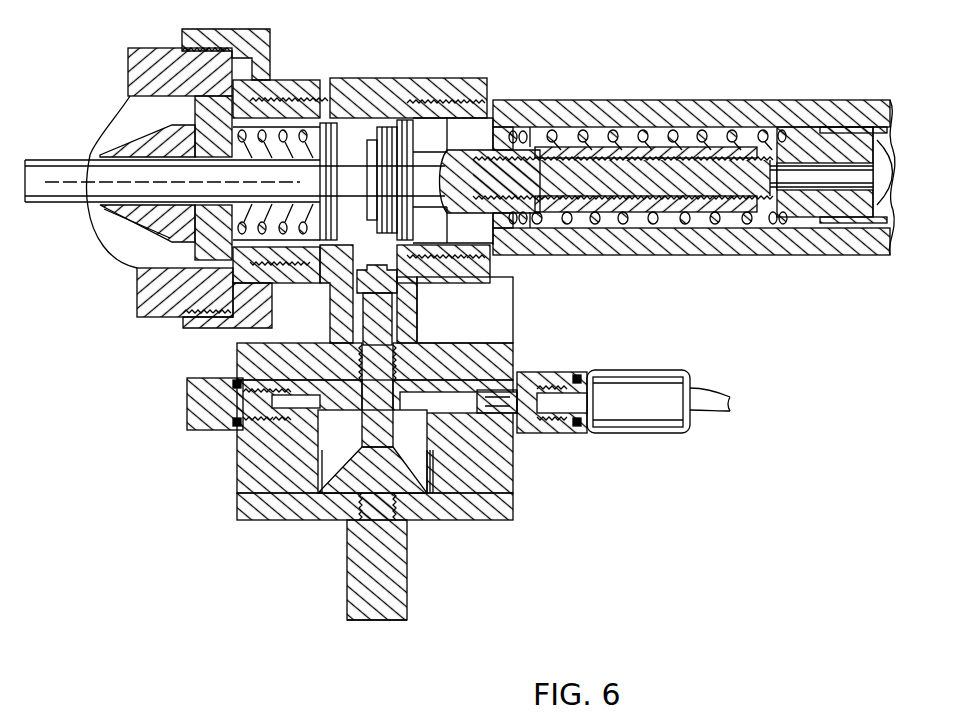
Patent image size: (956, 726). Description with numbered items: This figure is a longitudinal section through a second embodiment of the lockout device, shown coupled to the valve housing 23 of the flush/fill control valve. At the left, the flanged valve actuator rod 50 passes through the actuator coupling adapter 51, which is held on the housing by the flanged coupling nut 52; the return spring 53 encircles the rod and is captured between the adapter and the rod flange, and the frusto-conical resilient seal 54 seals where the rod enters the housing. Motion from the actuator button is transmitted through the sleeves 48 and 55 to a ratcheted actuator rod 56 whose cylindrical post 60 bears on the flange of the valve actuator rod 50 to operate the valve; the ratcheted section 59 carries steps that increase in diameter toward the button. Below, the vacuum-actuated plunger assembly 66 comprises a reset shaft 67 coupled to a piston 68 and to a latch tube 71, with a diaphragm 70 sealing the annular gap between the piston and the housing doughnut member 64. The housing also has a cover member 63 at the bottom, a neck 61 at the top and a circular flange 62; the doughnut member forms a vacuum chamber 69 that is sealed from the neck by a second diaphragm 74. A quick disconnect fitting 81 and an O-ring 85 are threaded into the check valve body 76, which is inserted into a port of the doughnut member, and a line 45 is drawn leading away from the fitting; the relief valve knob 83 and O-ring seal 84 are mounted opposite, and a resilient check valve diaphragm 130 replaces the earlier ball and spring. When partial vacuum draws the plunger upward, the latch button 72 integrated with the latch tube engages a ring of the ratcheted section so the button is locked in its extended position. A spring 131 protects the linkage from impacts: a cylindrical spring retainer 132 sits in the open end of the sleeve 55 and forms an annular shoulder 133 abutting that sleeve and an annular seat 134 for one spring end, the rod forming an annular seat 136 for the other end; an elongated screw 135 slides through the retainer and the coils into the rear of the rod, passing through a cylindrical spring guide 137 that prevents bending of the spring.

The valve housing 23 is at (155, 48).
The electrical lead 45 is at (713, 392).
The sleeve 48 is at (626, 100).
The valve actuator rod 50 is at (47, 186).
The actuator coupling adapter 51 is at (262, 92).
The flanged coupling nut 52 is at (270, 40).
The return spring 53 is at (333, 80).
The frusto-conical resilient seal 54 is at (124, 148).
The actuator sleeve 55 is at (857, 130).
The actuator rod 56 is at (428, 146).
The ratcheted section 59 is at (398, 120).
The cylindrical post 60 is at (338, 153).
The neck 61 is at (418, 308).
The circular flange 62 is at (458, 343).
The cover member 63 is at (498, 521).
The housing doughnut member 64 is at (237, 482).
The vacuum-actuated plunger assembly 66 is at (388, 628).
The reset shaft 67 is at (410, 568).
The piston 68 is at (350, 448).
The vacuum chamber 69 is at (446, 411).
The diaphragm 70 is at (433, 453).
The latch tube 71 is at (353, 305).
The latch button 72 is at (377, 266).
The second diaphragm 74 is at (350, 338).
The check valve body 76 is at (528, 373).
The quick disconnect fitting 81 is at (633, 373).
The relief valve knob 83 is at (187, 418).
The O-ring seal 84 is at (233, 425).
The O-ring 85 is at (575, 375).
The check valve diaphragm 130 is at (487, 417).
The spring 131 is at (657, 224).
The spring retainer 132 is at (807, 222).
The annular shoulder 133 is at (827, 127).
The annular seat 134 is at (777, 150).
The screw 135 is at (793, 177).
The annular seat 136 is at (524, 138).
The spring guide 137 is at (612, 212).